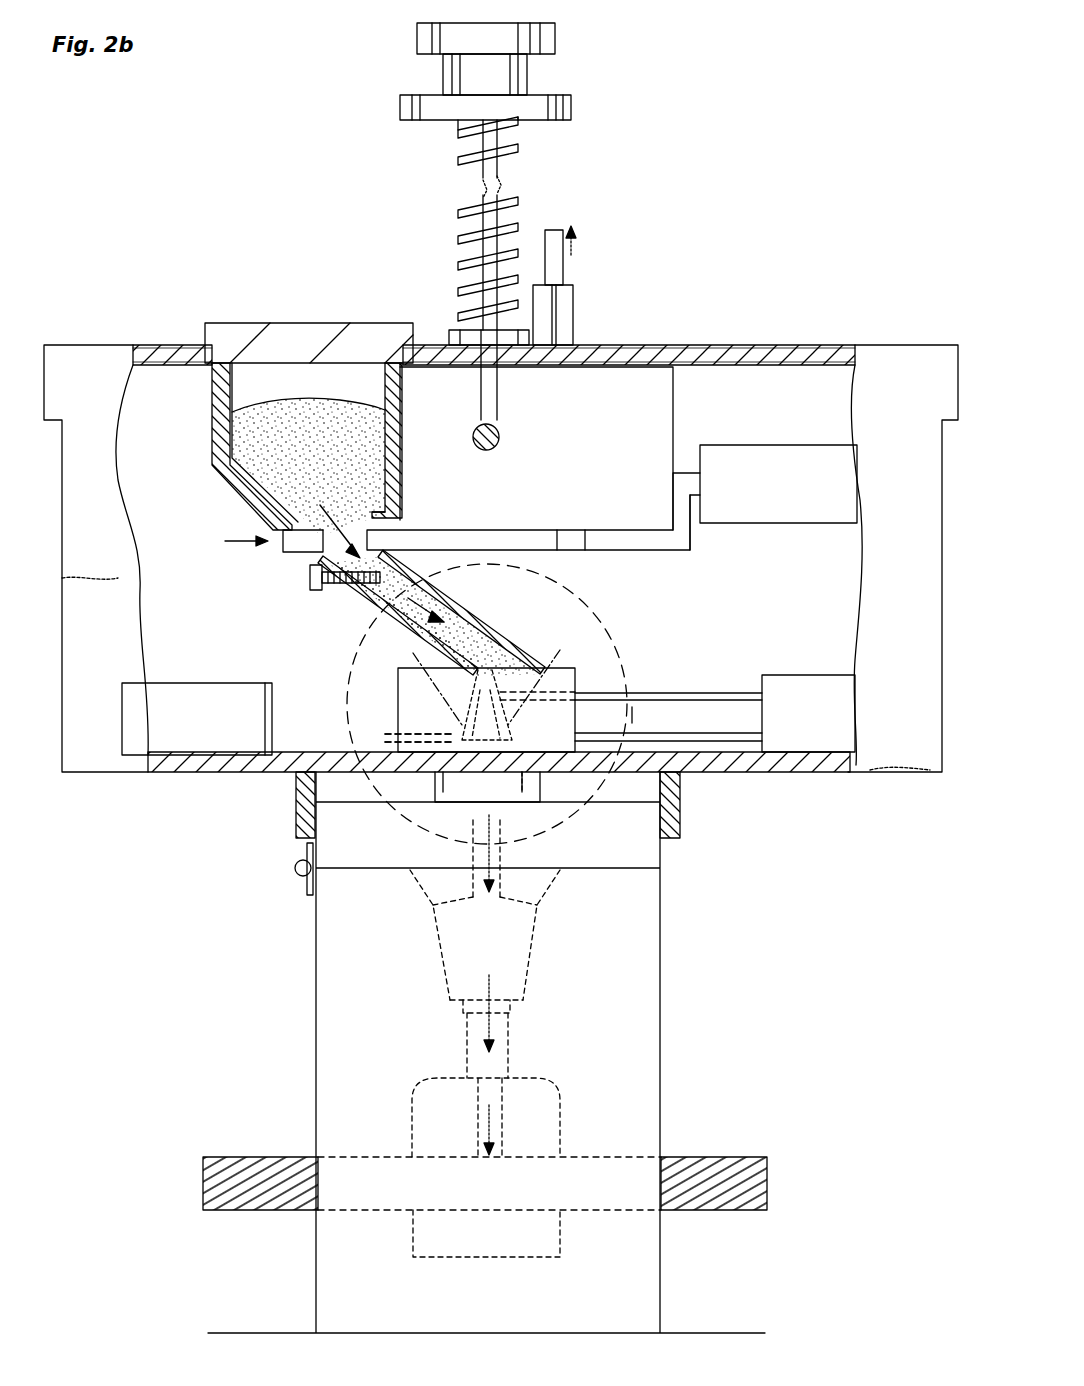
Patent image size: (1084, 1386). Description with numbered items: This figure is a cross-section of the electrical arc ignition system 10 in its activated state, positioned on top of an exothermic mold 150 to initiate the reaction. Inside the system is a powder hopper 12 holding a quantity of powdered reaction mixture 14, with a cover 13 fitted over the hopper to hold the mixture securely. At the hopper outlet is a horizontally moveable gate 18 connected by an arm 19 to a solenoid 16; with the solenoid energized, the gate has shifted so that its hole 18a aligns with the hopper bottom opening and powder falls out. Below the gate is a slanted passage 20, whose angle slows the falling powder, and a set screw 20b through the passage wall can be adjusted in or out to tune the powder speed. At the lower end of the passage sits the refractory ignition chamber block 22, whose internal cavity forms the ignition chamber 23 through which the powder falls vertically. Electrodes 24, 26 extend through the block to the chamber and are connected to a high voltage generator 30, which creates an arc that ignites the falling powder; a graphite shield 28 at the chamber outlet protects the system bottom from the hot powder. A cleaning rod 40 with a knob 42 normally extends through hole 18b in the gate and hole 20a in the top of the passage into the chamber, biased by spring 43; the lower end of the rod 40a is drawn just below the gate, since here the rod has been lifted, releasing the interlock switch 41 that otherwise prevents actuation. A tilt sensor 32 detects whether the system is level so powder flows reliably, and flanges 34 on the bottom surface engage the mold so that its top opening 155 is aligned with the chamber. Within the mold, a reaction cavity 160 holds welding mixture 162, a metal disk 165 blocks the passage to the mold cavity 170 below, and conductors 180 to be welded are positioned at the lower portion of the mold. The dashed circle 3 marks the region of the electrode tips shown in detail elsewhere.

The electrical arc ignition system 10 is at (160, 228).
The powder hopper 12 is at (214, 430).
The cover 13 is at (255, 345).
The powdered reaction mixture 14 is at (312, 420).
The solenoid 16 is at (789, 456).
The gate 18 is at (622, 550).
The hole in gate 18a is at (400, 482).
The hole in gate for cleaning rod 18b is at (571, 520).
The arm 19 is at (678, 470).
The slanted passage 20 is at (376, 588).
The hole in top of slanted passage 20a is at (494, 626).
The set screw 20b is at (310, 580).
The ignition chamber block 22 is at (576, 687).
The ignition chamber 23 is at (430, 676).
The electrode 24 is at (560, 694).
The electrode 26 is at (398, 736).
The graphite shield 28 is at (525, 790).
The high voltage generator 30 is at (815, 676).
The tilt sensor 32 is at (200, 683).
The flanges 34 is at (296, 808).
The cleaning rod 40 is at (480, 398).
The stirrer brush head 40a is at (500, 442).
The interlock switch 41 is at (574, 312).
The knob 42 is at (417, 40).
The biasing spring 43 is at (462, 210).
The exothermic mold 150 is at (250, 1005).
The opening at top of mold 155 is at (473, 850).
The reaction cavity 160 is at (425, 940).
The welding mixture 162 is at (530, 950).
The metal disk 165 is at (462, 1010).
The mold cavity 170 is at (527, 1108).
The conductors 180 is at (245, 1157).
The detail region of FIG. 3 is at (618, 645).